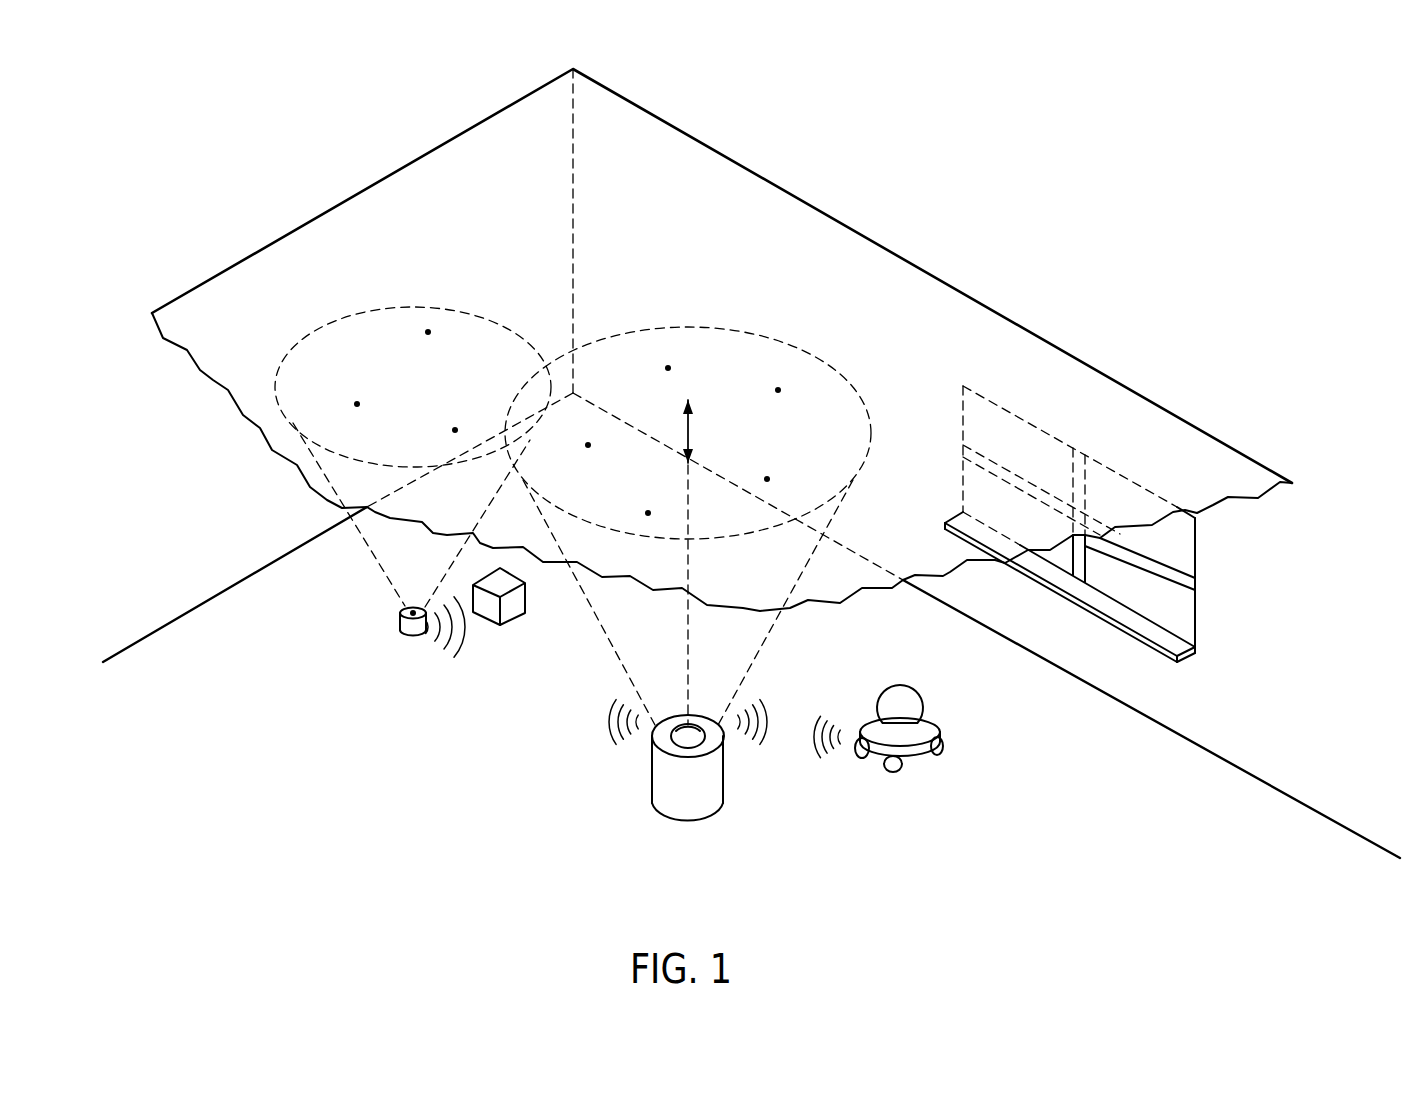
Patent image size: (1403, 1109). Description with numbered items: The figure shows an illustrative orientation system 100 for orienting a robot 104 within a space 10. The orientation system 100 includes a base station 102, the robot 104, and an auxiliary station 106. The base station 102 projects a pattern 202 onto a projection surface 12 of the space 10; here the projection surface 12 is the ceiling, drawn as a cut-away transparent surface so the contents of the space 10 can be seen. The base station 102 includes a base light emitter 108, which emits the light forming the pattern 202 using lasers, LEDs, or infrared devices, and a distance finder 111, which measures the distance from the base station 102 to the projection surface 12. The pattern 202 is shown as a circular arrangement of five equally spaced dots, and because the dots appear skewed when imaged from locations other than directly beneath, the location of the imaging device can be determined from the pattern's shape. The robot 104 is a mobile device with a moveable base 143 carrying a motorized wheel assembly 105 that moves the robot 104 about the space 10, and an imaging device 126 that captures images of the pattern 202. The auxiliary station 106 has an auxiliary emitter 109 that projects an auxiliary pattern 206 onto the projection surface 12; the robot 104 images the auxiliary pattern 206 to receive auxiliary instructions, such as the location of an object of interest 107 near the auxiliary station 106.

The space 10 is at (751, 473).
The projection surface 12 is at (722, 340).
The orientation system 100 is at (587, 692).
The base station 102 is at (695, 745).
The robot 104 is at (916, 731).
The motorized wheel assembly 105 is at (888, 772).
The auxiliary station 106 is at (391, 605).
The object of interest 107 is at (512, 608).
The base light emitter 108 is at (671, 748).
The auxiliary emitter 109 is at (413, 610).
The distance finder 111 is at (700, 730).
The imaging device 126 is at (900, 686).
The moveable base 143 is at (921, 765).
The pattern 202 is at (688, 496).
The auxiliary pattern 206 is at (416, 438).